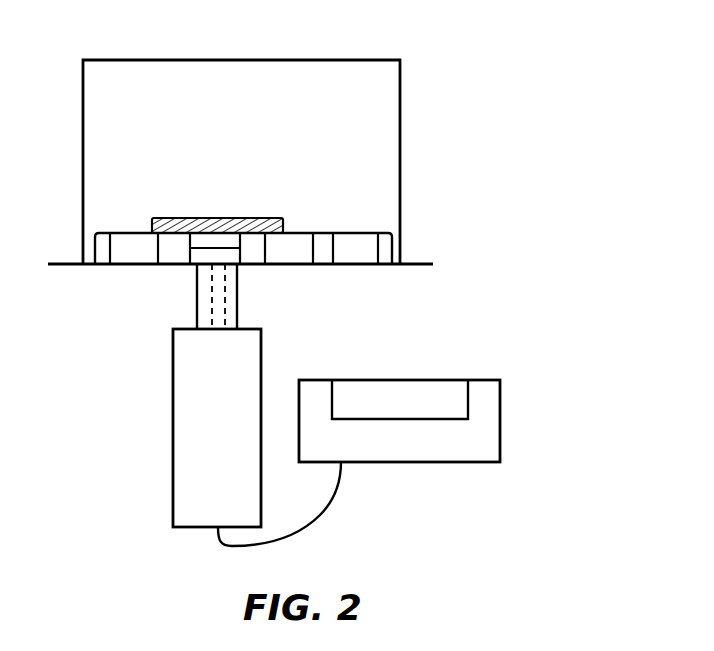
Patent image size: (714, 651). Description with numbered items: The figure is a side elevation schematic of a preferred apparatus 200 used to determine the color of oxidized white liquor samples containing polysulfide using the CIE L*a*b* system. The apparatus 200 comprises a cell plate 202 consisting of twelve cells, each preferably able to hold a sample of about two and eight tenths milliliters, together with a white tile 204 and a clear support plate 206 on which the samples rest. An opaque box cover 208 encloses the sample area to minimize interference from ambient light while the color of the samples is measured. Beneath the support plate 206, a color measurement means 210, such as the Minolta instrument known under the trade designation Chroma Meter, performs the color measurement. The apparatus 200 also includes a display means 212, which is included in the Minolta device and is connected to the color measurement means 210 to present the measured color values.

The apparatus 200 is at (514, 46).
The cell plate 202 is at (387, 253).
The white tile 204 is at (180, 218).
The clear support plate 206 is at (418, 258).
The opaque box cover 208 is at (400, 121).
The color measurement means 210 is at (173, 397).
The display means 212 is at (500, 427).